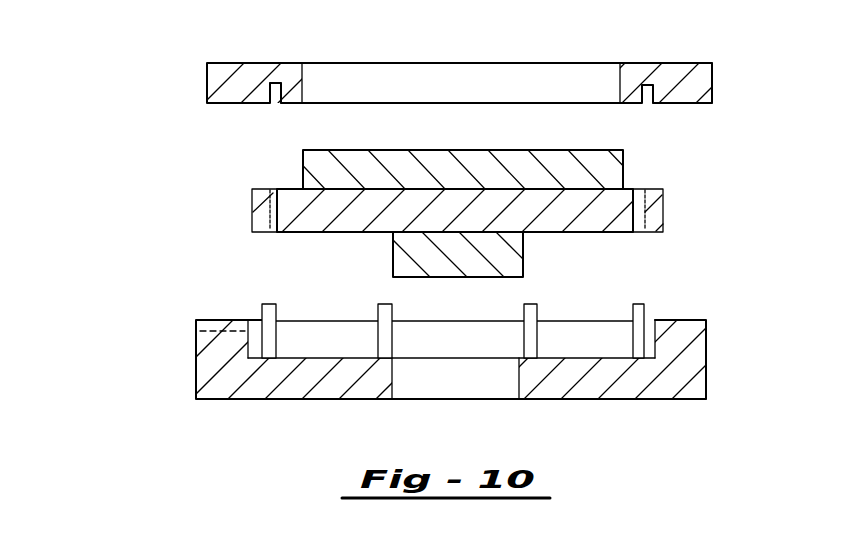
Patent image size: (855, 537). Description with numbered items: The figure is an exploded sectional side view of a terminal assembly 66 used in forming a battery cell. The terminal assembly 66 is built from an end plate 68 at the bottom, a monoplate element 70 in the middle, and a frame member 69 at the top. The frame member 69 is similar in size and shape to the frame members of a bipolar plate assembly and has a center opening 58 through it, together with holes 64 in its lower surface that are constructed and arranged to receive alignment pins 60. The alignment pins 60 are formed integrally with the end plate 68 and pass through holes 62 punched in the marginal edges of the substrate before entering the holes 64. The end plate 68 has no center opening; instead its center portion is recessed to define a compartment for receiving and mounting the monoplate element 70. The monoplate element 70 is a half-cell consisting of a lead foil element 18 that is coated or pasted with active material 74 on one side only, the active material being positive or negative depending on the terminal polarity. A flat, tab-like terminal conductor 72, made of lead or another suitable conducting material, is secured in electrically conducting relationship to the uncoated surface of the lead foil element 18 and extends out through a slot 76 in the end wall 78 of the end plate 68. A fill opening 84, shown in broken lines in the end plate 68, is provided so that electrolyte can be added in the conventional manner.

The center opening 58 is at (563, 78).
The frame member 69 is at (713, 82).
The holes 64 is at (272, 105).
The active material 74 is at (317, 166).
The lead foil element 18 is at (623, 188).
The holes 62 is at (266, 232).
The terminal conductor 72 is at (510, 257).
The monoplate element 70 is at (670, 206).
The end plate 68 is at (706, 362).
The slot 76 is at (491, 388).
The end wall 78 is at (640, 402).
The alignment pins 60 is at (378, 305).
The fill openings 84 is at (230, 332).
The terminal assembly 66 is at (100, 66).